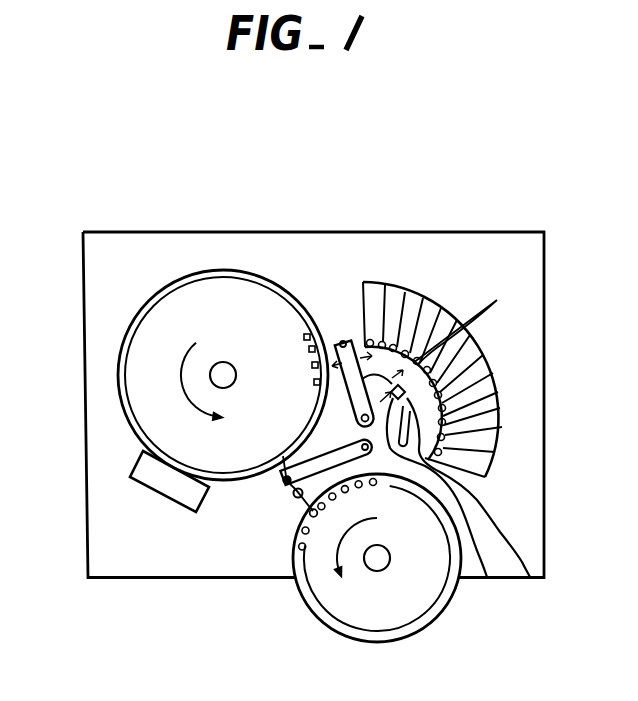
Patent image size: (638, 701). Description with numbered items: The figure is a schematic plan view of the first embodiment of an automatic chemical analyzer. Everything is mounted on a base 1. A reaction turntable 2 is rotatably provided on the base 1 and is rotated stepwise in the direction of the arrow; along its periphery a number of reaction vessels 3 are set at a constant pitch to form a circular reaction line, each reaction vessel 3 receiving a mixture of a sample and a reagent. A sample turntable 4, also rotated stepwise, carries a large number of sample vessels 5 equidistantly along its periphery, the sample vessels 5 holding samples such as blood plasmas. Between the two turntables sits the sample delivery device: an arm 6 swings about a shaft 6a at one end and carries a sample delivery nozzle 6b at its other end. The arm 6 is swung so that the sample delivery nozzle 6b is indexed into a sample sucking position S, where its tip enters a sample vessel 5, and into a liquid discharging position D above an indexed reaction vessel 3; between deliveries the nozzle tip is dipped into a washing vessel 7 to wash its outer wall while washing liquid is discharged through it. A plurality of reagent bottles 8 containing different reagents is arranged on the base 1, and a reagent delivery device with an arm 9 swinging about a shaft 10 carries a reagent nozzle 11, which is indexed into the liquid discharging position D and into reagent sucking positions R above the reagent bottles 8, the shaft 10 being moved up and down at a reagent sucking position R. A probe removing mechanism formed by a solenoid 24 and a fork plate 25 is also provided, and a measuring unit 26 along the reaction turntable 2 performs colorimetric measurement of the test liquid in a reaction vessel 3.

The base 1 is at (120, 232).
The reaction turntable 2 is at (190, 268).
The reaction vessels 3 is at (305, 335).
The liquid discharging position D is at (303, 349).
The reagent nozzle 11 is at (340, 342).
The arm 9 is at (355, 342).
The shaft 10 is at (360, 418).
The reagent bottles 8 is at (400, 283).
The reagent sucking positions R is at (464, 325).
The shaft 6a is at (338, 437).
The measuring unit 26 is at (130, 470).
The sample delivery nozzle 6b is at (280, 482).
The washing vessel 7 is at (293, 494).
The sample sucking position S is at (287, 530).
The arm 6 is at (297, 574).
The sample vessels 5 is at (376, 484).
The sample turntable 4 is at (345, 634).
The solenoid 24 is at (487, 577).
The fork plate 25 is at (530, 577).